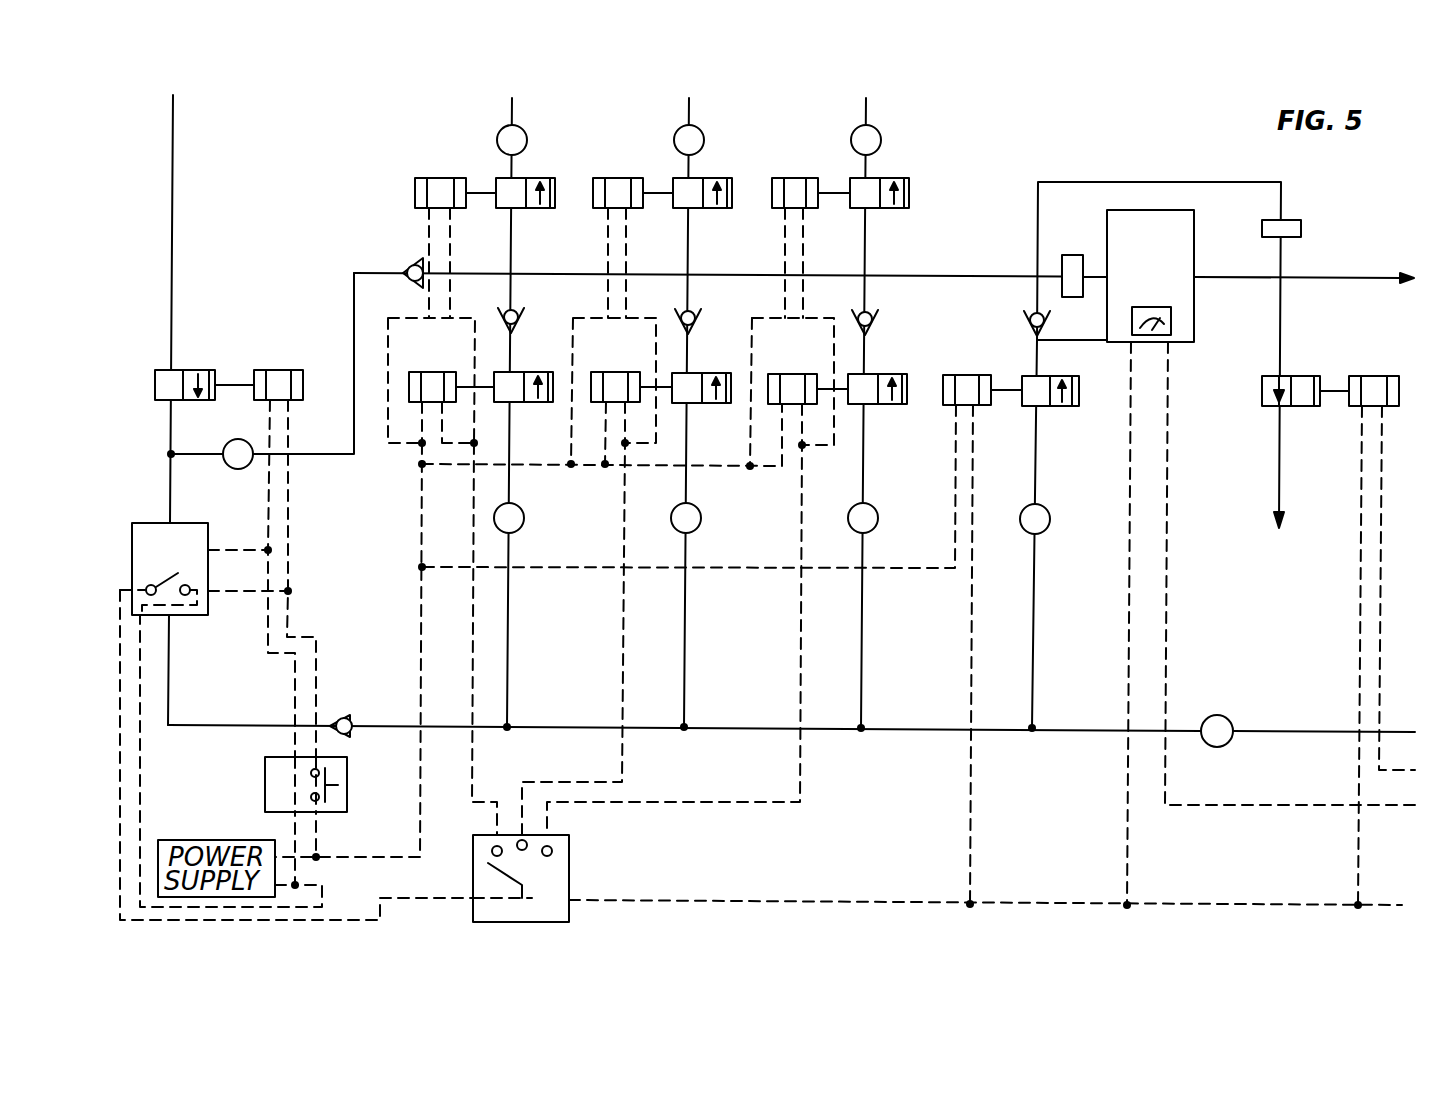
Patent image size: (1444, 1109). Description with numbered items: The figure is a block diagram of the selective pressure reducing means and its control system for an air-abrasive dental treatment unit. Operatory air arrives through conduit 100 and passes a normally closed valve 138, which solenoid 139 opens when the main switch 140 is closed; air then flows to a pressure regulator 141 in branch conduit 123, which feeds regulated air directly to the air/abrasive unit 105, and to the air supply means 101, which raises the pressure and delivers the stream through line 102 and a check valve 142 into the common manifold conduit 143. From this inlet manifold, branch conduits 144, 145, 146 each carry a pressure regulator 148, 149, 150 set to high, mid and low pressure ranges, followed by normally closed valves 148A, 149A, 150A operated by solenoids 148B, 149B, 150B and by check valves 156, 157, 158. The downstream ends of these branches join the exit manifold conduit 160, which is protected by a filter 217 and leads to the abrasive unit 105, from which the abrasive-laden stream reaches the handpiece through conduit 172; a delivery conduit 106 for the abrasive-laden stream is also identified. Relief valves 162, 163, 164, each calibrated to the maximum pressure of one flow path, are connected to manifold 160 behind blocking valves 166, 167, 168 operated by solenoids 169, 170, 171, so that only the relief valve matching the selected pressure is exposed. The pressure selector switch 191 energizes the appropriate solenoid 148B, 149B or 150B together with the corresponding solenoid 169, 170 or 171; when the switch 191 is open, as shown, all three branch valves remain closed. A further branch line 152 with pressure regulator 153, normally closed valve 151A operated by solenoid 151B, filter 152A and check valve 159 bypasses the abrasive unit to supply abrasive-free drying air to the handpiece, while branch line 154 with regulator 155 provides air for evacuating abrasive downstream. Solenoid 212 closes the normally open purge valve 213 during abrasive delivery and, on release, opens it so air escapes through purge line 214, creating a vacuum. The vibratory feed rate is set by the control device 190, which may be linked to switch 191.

The conduit 100 is at (173, 213).
The air supply means 101 is at (170, 569).
The second conduit 102 is at (169, 682).
The abrasive delivery means 105 is at (1180, 274).
The delivery conduit 106 is at (172, 578).
The branch conduit 123 is at (313, 456).
The valve 138 is at (195, 370).
The solenoid 139 is at (283, 370).
The main switch 140 is at (263, 782).
The pressure regulator 141 is at (226, 465).
The check valve 142 is at (348, 715).
The common manifold conduit 143 is at (905, 729).
The manifold branch conduit 144 is at (507, 672).
The manifold branch conduit 145 is at (684, 672).
The manifold branch conduit 146 is at (861, 672).
The pressure regulator 148 is at (522, 528).
The normally closed valve 148A is at (541, 402).
The solenoid 148B is at (433, 372).
The pressure regulator 149 is at (699, 528).
The normally closed valve 149A is at (718, 403).
The solenoid 149B is at (615, 372).
The pressure regulator 150 is at (876, 528).
The normally closed valve 150A is at (895, 404).
The solenoid 150B is at (792, 374).
The normally closed valve 151A is at (1058, 406).
The solenoid 151B is at (966, 375).
The manifold branch line 152 is at (1140, 182).
The filter 152A is at (1283, 198).
The pressure regulator 153 is at (1048, 530).
The manifold branch line 154 is at (1278, 731).
The regulator 155 is at (1226, 745).
The check valve 156 is at (520, 318).
The check valve 157 is at (697, 319).
The check valve 158 is at (874, 320).
The check valve 159 is at (1046, 318).
The exit manifold conduit 160 is at (790, 275).
The relief valve 162 is at (524, 130).
The relief valve 163 is at (701, 130).
The relief valve 164 is at (878, 130).
The normally closed valve 166 is at (541, 178).
The normally closed valve 167 is at (720, 178).
The normally closed valve 168 is at (895, 178).
The solenoid 169 is at (440, 178).
The solenoid 170 is at (593, 195).
The solenoid 171 is at (772, 195).
The conduit 172 is at (1340, 278).
The control device 190 is at (1172, 322).
The pressure selector switch 191 is at (569, 848).
The solenoid 212 is at (1375, 376).
The purge valve 213 is at (1302, 376).
The purge line 214 is at (1279, 477).
The filter 217 is at (1072, 255).